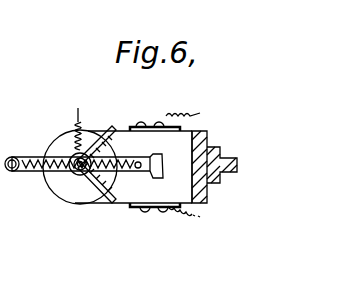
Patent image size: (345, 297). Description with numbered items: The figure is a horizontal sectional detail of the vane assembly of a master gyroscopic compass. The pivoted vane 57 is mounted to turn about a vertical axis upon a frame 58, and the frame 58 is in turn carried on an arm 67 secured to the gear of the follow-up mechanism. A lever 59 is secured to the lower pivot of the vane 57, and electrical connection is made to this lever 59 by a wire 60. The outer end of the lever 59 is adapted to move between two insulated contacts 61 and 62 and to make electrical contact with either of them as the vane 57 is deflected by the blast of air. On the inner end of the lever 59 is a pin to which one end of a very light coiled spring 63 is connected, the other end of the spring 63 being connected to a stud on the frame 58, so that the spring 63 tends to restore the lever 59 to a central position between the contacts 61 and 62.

The pivoted vane 57 is at (97, 192).
The frame 58 is at (69, 195).
The lever 59 is at (158, 174).
The wire 60 is at (78, 108).
The insulated contact 61 is at (154, 127).
The insulated contact 62 is at (160, 208).
The coiled spring 63 is at (31, 173).
The arm 67 is at (228, 161).